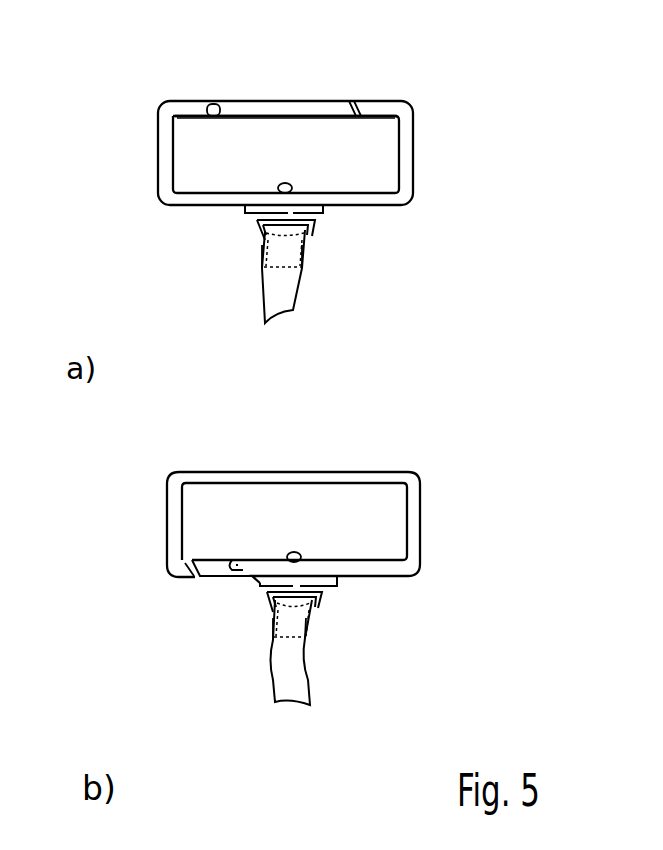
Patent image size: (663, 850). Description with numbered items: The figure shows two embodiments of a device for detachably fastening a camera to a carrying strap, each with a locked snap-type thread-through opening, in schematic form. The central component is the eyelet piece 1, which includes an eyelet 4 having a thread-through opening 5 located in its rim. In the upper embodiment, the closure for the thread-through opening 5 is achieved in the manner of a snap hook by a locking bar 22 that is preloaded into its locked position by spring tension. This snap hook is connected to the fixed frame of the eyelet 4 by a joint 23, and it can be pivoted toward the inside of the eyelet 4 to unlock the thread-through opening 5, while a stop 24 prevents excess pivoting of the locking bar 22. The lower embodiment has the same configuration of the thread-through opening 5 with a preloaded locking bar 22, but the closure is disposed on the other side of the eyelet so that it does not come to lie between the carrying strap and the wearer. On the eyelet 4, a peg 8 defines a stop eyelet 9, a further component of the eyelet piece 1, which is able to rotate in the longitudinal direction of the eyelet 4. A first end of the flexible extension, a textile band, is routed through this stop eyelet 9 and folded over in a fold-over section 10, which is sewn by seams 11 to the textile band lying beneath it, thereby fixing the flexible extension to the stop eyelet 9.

In FIG. 5a, the eyelet piece 1 is at (128, 176).
In FIG. 5b, the eyelet piece 1 is at (136, 547).
In FIG. 5a, the eyelet 4 is at (407, 133).
In FIG. 5b, the eyelet 4 is at (418, 500).
In FIG. 5a, the thread-through opening 5 is at (284, 124).
In FIG. 5b, the thread-through opening 5 is at (207, 587).
In FIG. 5a, the peg 8 is at (293, 187).
In FIG. 5b, the peg 8 is at (300, 557).
In FIG. 5a, the stop eyelet 9 is at (317, 221).
In FIG. 5b, the stop eyelet 9 is at (325, 592).
In FIG. 5a, the fold-over section 10 is at (277, 248).
In FIG. 5b, the fold-over section 10 is at (287, 622).
In FIG. 5a, the seams 11 is at (262, 253).
In FIG. 5b, the seams 11 is at (275, 627).
In FIG. 5a, the locking bar 22 is at (296, 108).
In FIG. 5a, the joint 23 is at (211, 104).
In FIG. 5a, the stop 24 is at (353, 99).